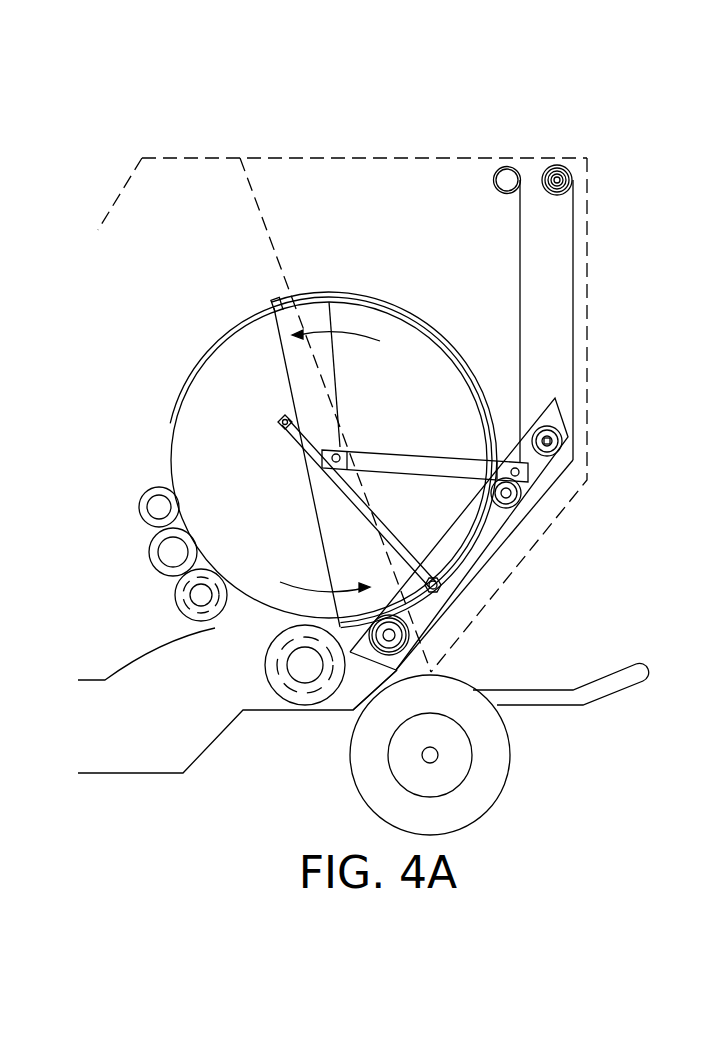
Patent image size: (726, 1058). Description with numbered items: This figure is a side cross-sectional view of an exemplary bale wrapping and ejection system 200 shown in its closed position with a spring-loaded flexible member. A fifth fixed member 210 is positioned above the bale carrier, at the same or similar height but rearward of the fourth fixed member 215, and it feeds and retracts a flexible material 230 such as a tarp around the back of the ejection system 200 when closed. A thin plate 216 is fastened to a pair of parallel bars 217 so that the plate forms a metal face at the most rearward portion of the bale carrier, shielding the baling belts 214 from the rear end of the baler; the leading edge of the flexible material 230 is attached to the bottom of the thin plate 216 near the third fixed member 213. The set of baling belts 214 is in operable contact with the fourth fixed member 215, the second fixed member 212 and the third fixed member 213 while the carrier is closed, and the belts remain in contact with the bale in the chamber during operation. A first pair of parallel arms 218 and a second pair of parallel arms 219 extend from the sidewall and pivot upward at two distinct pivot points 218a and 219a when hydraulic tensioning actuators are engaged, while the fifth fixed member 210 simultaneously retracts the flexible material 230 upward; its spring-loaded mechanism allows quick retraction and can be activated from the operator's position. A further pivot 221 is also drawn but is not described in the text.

The ejection system 200 is at (348, 142).
The fifth fixed member 210 is at (557, 176).
The second fixed member 212 is at (521, 494).
The third fixed member 213 is at (410, 637).
The baling belts 214 is at (519, 300).
The fourth fixed member 215 is at (507, 178).
The thin plate 216 is at (482, 555).
The parallel bars 217 is at (397, 672).
The first pair of parallel arms 218 is at (406, 466).
The pivot point 218a is at (329, 302).
The second pair of parallel arms 219 is at (300, 443).
The pivot point 219a is at (278, 418).
The pivot 221 is at (566, 430).
The flexible material 230 is at (574, 292).